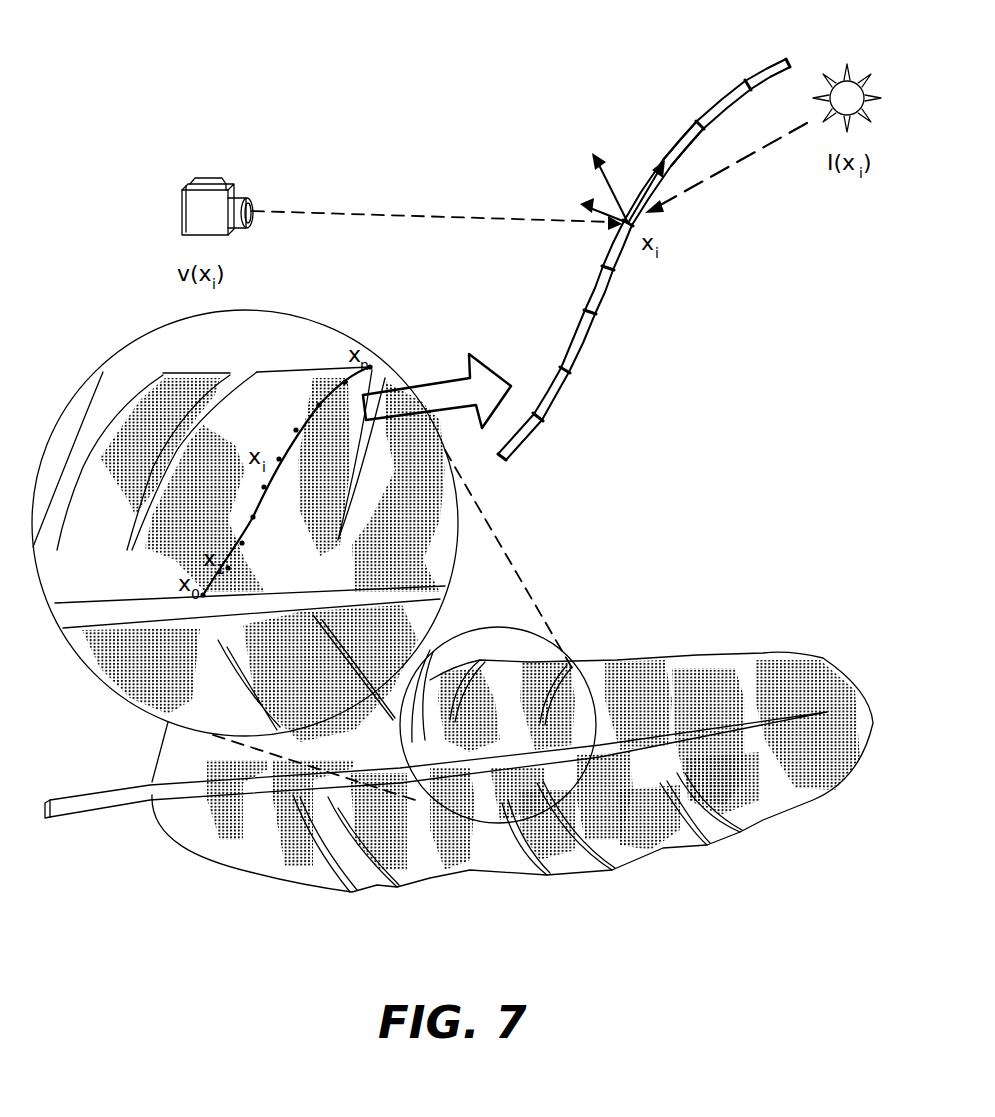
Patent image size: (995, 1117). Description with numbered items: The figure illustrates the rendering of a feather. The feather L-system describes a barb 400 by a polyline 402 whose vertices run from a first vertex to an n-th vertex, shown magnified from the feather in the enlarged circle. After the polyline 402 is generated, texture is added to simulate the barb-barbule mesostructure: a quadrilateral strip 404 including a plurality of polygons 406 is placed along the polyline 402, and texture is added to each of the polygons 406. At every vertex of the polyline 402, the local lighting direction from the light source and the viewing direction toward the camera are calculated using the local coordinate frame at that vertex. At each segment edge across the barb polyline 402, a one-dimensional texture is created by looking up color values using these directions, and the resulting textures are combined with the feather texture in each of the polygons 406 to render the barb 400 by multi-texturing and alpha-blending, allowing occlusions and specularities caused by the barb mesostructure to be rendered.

The barb 400 is at (302, 410).
The polyline 402 is at (340, 383).
The quadrilateral strip 404 is at (747, 83).
The polygons 406 is at (690, 100).